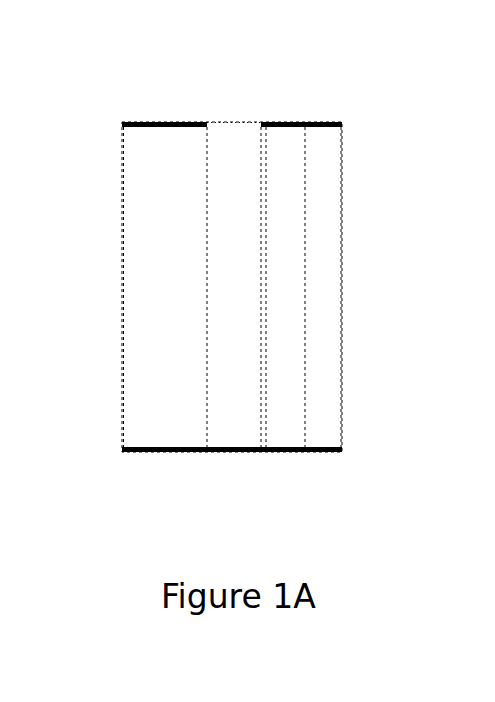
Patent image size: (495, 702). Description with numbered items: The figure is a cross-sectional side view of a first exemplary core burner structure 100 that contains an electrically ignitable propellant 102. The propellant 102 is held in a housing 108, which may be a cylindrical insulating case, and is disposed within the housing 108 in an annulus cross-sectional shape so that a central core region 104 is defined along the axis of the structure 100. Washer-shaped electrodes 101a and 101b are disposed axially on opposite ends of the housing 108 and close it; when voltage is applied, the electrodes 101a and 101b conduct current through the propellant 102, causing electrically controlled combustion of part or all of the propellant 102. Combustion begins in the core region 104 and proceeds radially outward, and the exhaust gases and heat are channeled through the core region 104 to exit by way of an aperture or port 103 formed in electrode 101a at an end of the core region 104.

The core burner structure 100 is at (90, 75).
The electrode 101a is at (326, 123).
The electrode 101b is at (300, 452).
The electrically ignitable propellant 102 is at (313, 202).
The aperture or port 103 is at (214, 110).
The core region 104 is at (245, 426).
The housing 108 is at (342, 433).